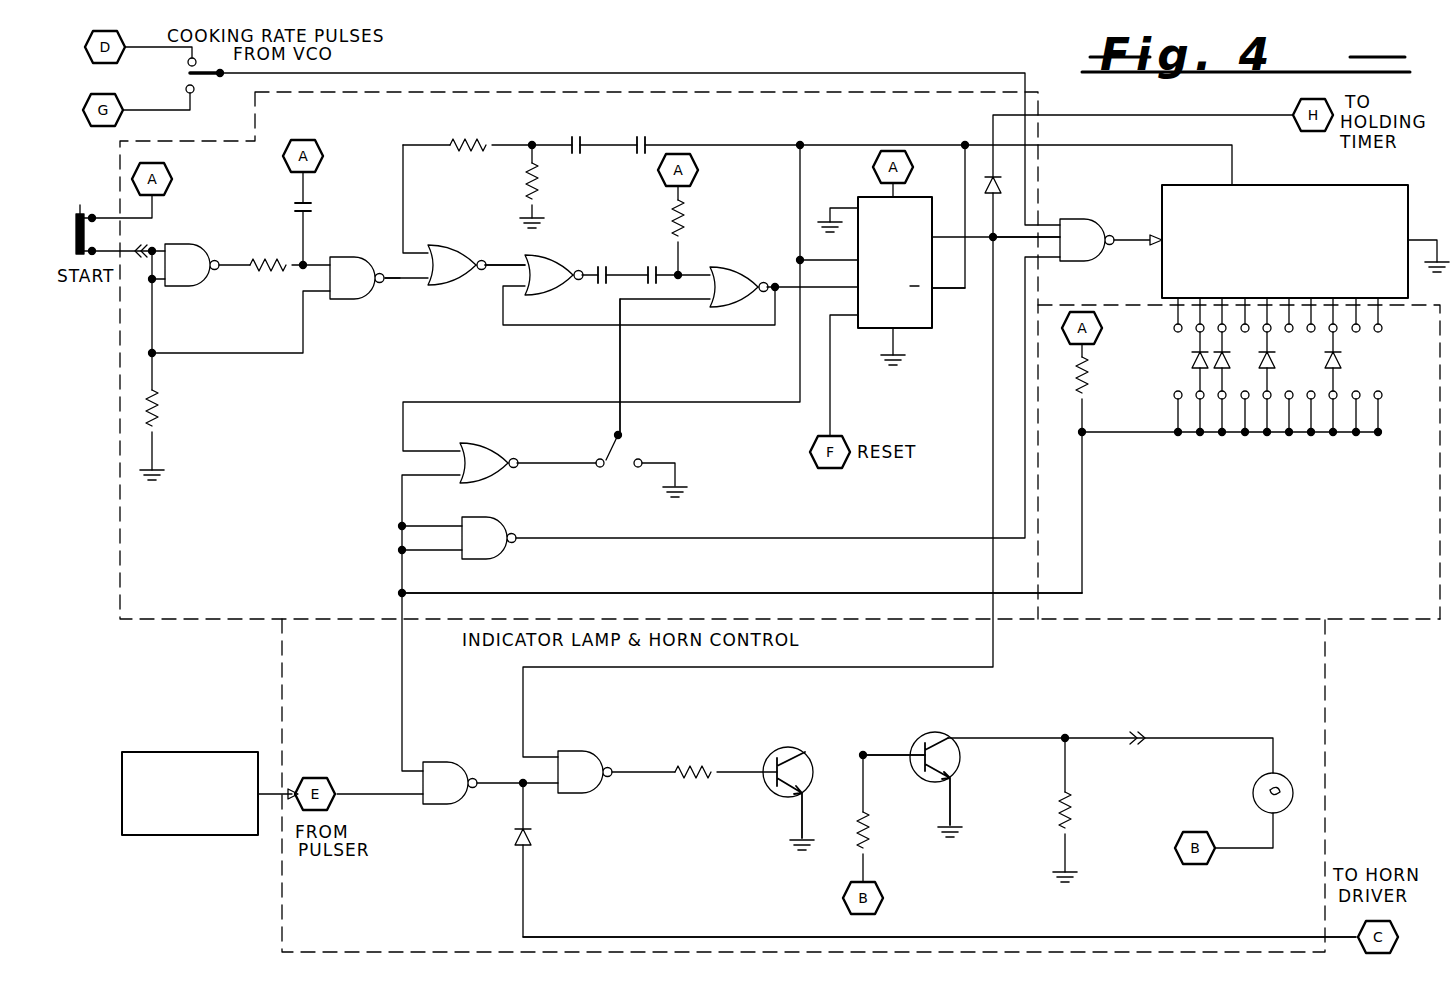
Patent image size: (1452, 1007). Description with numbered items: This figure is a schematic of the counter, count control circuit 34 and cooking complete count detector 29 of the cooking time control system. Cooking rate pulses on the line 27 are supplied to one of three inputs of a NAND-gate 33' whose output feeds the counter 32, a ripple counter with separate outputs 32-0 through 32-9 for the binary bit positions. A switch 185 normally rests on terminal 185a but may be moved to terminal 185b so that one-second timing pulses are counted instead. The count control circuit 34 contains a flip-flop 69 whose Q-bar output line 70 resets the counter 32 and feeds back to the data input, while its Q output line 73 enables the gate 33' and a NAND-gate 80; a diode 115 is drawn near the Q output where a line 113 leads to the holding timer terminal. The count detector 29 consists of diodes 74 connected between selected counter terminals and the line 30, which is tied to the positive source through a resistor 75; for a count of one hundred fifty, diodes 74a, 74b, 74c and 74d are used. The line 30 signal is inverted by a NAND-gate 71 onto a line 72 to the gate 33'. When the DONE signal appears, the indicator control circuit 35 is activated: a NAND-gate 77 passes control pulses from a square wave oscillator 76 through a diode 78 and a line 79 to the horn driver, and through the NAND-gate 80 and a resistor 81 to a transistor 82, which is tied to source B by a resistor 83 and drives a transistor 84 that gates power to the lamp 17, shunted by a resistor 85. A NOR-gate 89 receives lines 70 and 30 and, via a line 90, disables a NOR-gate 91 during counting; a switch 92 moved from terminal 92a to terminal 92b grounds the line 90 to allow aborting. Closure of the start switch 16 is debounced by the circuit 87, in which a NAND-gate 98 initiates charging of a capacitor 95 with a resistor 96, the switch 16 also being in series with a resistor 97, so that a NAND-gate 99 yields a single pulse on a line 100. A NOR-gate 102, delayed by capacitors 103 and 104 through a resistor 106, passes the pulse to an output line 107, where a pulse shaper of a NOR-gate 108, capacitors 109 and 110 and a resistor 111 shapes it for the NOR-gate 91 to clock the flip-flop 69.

The start switch 16 is at (76, 212).
The lamp 17 is at (1253, 796).
The line 27 is at (637, 74).
The count detector 29 is at (1239, 462).
The line 30 is at (1082, 583).
The counter 32 is at (1313, 183).
The output terminal 32-0 is at (1172, 320).
The output terminal 32-9 is at (1380, 326).
The NAND-gate 33' is at (1087, 225).
The count control circuit 34 is at (780, 355).
The indicator control circuit 35 is at (902, 862).
The flip-flop 69 is at (920, 335).
The Q-bar output line 70 is at (950, 295).
The NAND-gate 71 is at (478, 550).
The line 72 is at (968, 531).
The line 73 is at (1050, 243).
The diodes 74 is at (1172, 377).
The diode 74a is at (1191, 361).
The diode 74b is at (1226, 360).
The diode 74c is at (1288, 361).
The diode 74d is at (1339, 361).
The resistor 75 is at (1090, 393).
The square wave oscillator 76 is at (178, 752).
The NAND-gate 77 is at (449, 765).
The diode 78 is at (535, 838).
The line 79 is at (594, 936).
The NAND-gate 80 is at (587, 752).
The resistor 81 is at (699, 762).
The transistor 82 is at (791, 752).
The resistor 83 is at (870, 838).
The transistor 84 is at (936, 733).
The resistor 85 is at (1073, 815).
The circuit 87 is at (240, 233).
The NOR-gate 89 is at (484, 450).
The line 90 is at (620, 370).
The NOR-gate 91 is at (732, 274).
The switch 92 is at (627, 446).
The terminal 92a is at (597, 470).
The terminal 92b is at (637, 471).
The capacitor 95 is at (312, 207).
The resistor 96 is at (268, 258).
The resistor 97 is at (160, 410).
The NAND-gate 98 is at (186, 250).
The NAND-gate 99 is at (350, 262).
The line 100 is at (392, 288).
The NOR-gate 102 is at (449, 247).
The capacitor 103 is at (575, 157).
The capacitor 104 is at (645, 141).
The resistor 106 is at (476, 152).
The output line 107 is at (503, 261).
The NOR-gate 108 is at (545, 260).
The capacitor 109 is at (603, 286).
The capacitor 110 is at (654, 266).
The resistor 111 is at (672, 219).
The line 113 is at (1103, 112).
The diode 115 is at (1003, 189).
The switch 185 is at (230, 101).
The terminal 185a is at (188, 68).
The terminal 185b is at (186, 91).